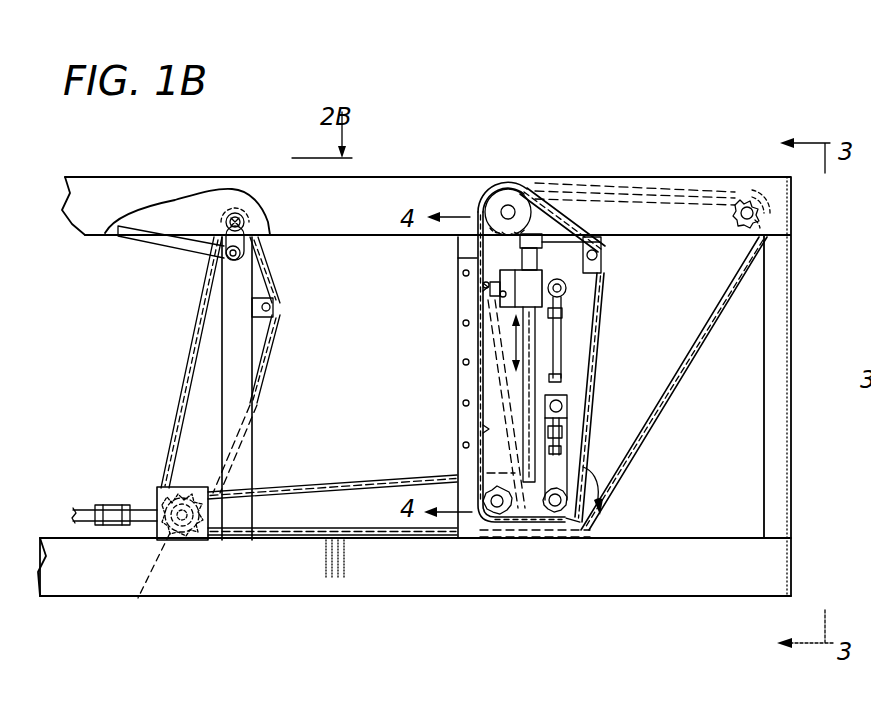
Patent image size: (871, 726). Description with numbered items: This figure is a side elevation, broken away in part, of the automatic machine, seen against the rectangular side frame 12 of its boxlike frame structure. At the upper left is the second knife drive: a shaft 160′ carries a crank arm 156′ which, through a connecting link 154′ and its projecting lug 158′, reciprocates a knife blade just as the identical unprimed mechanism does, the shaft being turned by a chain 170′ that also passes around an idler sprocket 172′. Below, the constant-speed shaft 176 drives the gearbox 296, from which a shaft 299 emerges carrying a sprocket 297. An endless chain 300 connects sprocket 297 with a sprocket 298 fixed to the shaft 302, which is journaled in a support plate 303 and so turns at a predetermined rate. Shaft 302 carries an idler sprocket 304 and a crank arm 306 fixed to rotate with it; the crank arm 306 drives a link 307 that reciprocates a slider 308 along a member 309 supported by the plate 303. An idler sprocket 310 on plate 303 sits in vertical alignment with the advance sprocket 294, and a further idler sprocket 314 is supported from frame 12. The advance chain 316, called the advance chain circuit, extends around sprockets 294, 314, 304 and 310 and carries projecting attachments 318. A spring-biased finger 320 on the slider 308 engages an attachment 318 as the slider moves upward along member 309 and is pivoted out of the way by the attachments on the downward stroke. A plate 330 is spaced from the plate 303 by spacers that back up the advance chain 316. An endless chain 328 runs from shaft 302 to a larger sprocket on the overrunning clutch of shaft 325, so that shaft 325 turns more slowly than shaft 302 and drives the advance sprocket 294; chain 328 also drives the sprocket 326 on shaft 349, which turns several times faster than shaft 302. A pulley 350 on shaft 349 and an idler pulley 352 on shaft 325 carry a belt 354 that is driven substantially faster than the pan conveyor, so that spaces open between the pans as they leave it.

The side frame 12 is at (700, 583).
The shaft 160′ is at (236, 212).
The crank arm 156′ is at (245, 232).
The pivot link 158′ is at (245, 253).
The arm 154′ is at (152, 238).
The support strut 170′ is at (192, 365).
The bracket strut 172′ is at (262, 300).
The gearbox 296 is at (160, 487).
The sprocket 297 is at (196, 532).
The shaft 299 is at (140, 581).
The shaft 176 is at (91, 506).
The endless chain 300 is at (360, 447).
The plate 330 is at (464, 422).
The advance chain 316 is at (468, 205).
The projecting attachments 318 is at (486, 283).
The support plate 303 is at (490, 455).
The advance sprocket 294 is at (518, 198).
The idler pulley 352 is at (509, 182).
The shaft 325 is at (515, 212).
The belt 354 is at (613, 178).
The sprocket 326 is at (738, 197).
The shaft 349 is at (760, 216).
The pulley 350 is at (770, 202).
The idler sprocket 314 is at (603, 262).
The sprocket 298 is at (593, 492).
The endless chain 328 is at (696, 330).
The slider 308 is at (544, 276).
The projecting finger 320 is at (503, 290).
The member 309 is at (532, 335).
The link 307 is at (558, 356).
The crank arm 306 is at (567, 430).
The idler sprocket 310 is at (486, 510).
The idler sprocket 304 is at (565, 510).
The shaft 302 is at (569, 508).